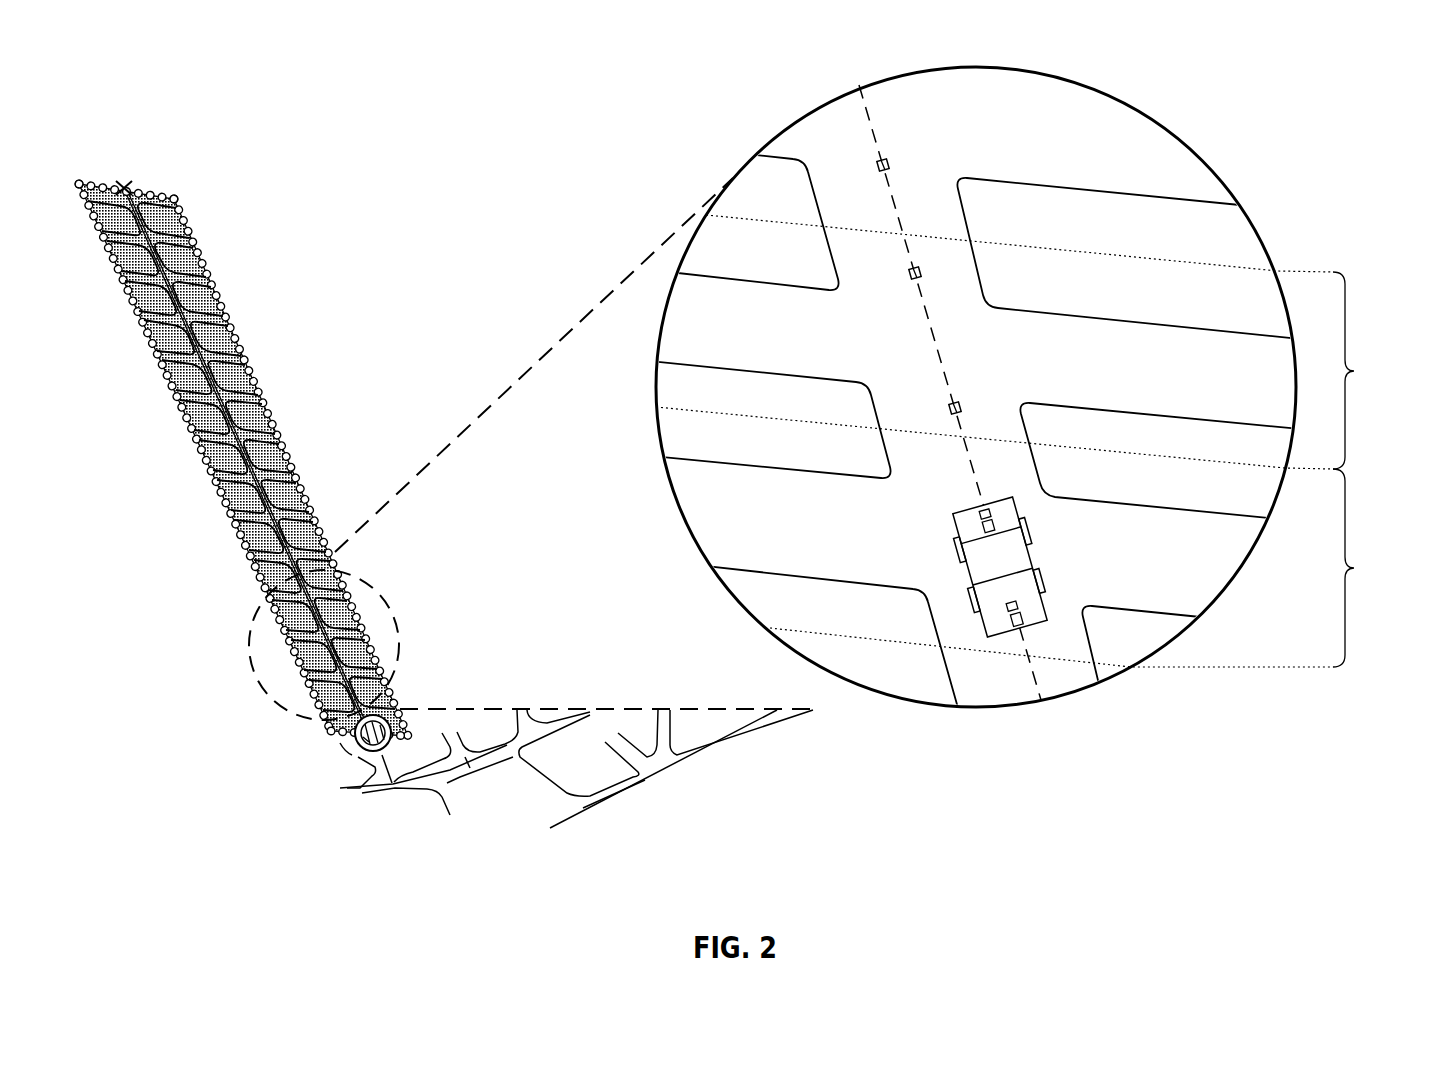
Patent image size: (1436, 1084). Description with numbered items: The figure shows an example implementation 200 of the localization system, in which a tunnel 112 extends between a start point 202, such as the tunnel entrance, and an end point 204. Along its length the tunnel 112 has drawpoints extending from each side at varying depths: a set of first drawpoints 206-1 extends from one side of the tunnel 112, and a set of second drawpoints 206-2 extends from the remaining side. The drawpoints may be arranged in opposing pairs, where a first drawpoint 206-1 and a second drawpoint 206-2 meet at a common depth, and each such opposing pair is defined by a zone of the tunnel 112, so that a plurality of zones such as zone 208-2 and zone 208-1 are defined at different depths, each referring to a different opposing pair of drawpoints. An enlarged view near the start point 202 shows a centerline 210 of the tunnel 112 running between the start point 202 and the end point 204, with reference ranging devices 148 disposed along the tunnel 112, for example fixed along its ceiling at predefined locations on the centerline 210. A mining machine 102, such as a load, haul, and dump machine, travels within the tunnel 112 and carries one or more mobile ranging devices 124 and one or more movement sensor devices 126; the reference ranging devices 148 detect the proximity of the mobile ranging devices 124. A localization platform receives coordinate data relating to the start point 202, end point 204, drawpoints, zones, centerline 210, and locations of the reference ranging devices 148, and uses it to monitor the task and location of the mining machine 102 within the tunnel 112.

The example implementation 200 is at (178, 82).
The end point 204 is at (135, 185).
The tunnel 112 is at (178, 218).
The first drawpoints 206-1 is at (230, 527).
The second drawpoints 206-2 is at (315, 522).
The start point 202 is at (356, 742).
The reference ranging devices 148 is at (897, 160).
The mining machine 102 is at (957, 530).
The mobile ranging devices 124 is at (992, 510).
The movement sensor devices 126 is at (993, 524).
The zone 208-2 is at (1041, 342).
The zone 208-1 is at (1098, 568).
The centerline 210 is at (1038, 675).